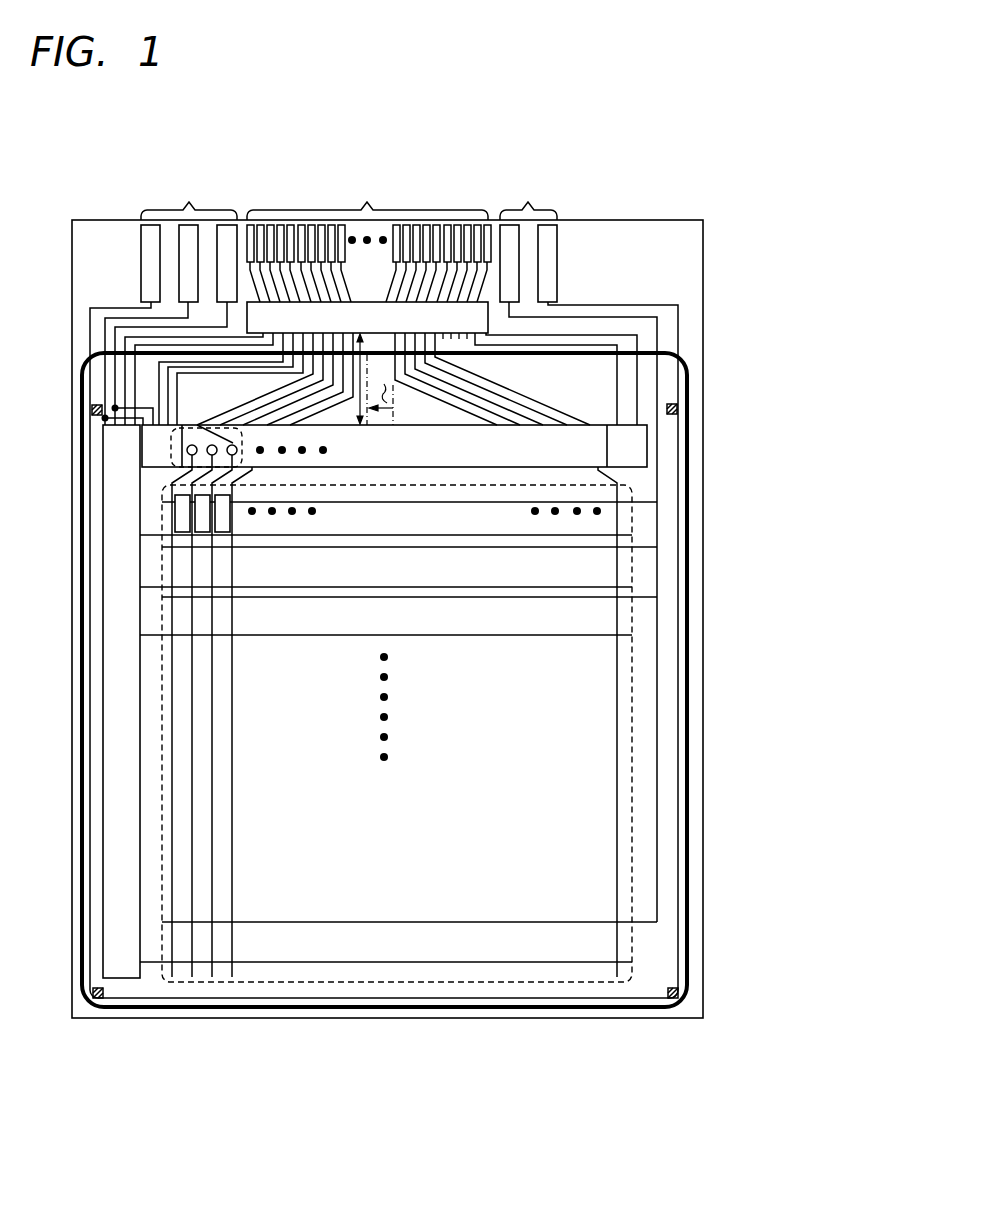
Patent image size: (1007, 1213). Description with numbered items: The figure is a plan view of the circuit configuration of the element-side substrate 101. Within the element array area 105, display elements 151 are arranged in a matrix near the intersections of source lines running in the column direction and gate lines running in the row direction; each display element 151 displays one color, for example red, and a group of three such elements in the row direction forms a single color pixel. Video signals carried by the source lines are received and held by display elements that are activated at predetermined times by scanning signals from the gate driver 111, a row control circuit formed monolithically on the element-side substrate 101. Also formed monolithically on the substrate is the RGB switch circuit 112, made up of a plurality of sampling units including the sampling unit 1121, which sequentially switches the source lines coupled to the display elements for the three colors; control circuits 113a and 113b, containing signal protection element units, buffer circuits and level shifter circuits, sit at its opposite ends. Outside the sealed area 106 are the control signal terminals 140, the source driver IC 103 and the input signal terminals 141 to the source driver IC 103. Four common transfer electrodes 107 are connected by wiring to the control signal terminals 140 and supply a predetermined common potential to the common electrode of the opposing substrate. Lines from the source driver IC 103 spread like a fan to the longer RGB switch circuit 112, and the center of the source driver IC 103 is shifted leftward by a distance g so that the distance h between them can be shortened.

The element-side substrate 101 is at (401, 588).
The control signal terminals 140 is at (349, 237).
The input signal terminals 141 is at (369, 236).
The source driver IC 103 is at (368, 300).
The common transfer electrodes 107 is at (390, 688).
The sealed area 106 is at (418, 680).
The gate driver 111 is at (154, 640).
The control circuit 113a is at (165, 470).
The control circuit 113b is at (620, 655).
The RGB switch circuit 112 is at (394, 431).
The sampling unit 1121 is at (199, 428).
The element array area 105 is at (398, 773).
The display elements 151 is at (233, 534).